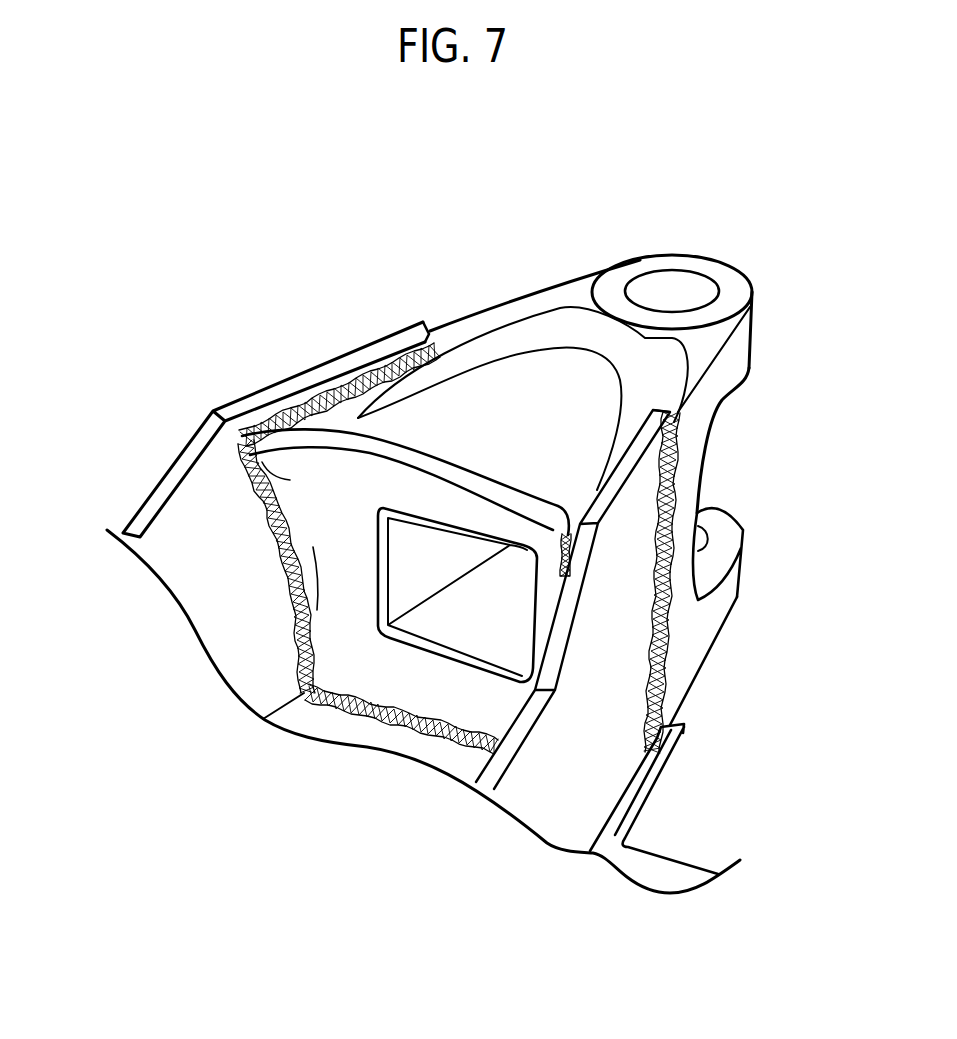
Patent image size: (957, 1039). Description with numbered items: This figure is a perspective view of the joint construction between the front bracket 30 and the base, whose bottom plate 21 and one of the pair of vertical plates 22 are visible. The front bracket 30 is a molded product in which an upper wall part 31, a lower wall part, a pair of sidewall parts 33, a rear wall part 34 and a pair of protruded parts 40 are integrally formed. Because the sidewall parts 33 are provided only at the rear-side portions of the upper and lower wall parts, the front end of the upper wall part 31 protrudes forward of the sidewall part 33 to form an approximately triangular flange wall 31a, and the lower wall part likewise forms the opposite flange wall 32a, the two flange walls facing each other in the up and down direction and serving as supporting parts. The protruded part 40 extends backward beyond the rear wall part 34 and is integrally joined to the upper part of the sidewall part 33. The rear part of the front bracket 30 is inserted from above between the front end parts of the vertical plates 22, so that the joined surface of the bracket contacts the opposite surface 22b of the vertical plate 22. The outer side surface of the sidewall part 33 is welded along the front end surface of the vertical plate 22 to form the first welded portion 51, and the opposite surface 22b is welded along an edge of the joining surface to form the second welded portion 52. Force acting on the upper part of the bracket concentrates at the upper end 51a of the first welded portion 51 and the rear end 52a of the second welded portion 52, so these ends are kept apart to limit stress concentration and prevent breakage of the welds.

The front bracket 30 is at (566, 228).
The upper wall part 31 is at (532, 337).
The flange wall 31a is at (732, 353).
The sidewall part 33 is at (685, 493).
The flange wall 32a is at (730, 593).
The first welded portion 51 is at (667, 672).
The upper end of first welded portion 51a is at (442, 333).
The second welded portion 52 is at (258, 502).
The rear end of second welded portion 52a is at (233, 448).
The protruded part 40 is at (307, 428).
The rear wall part 34 is at (445, 675).
The vertical plate 22 is at (560, 806).
The opposite surface 22b is at (227, 634).
The bottom plate 21 is at (653, 866).